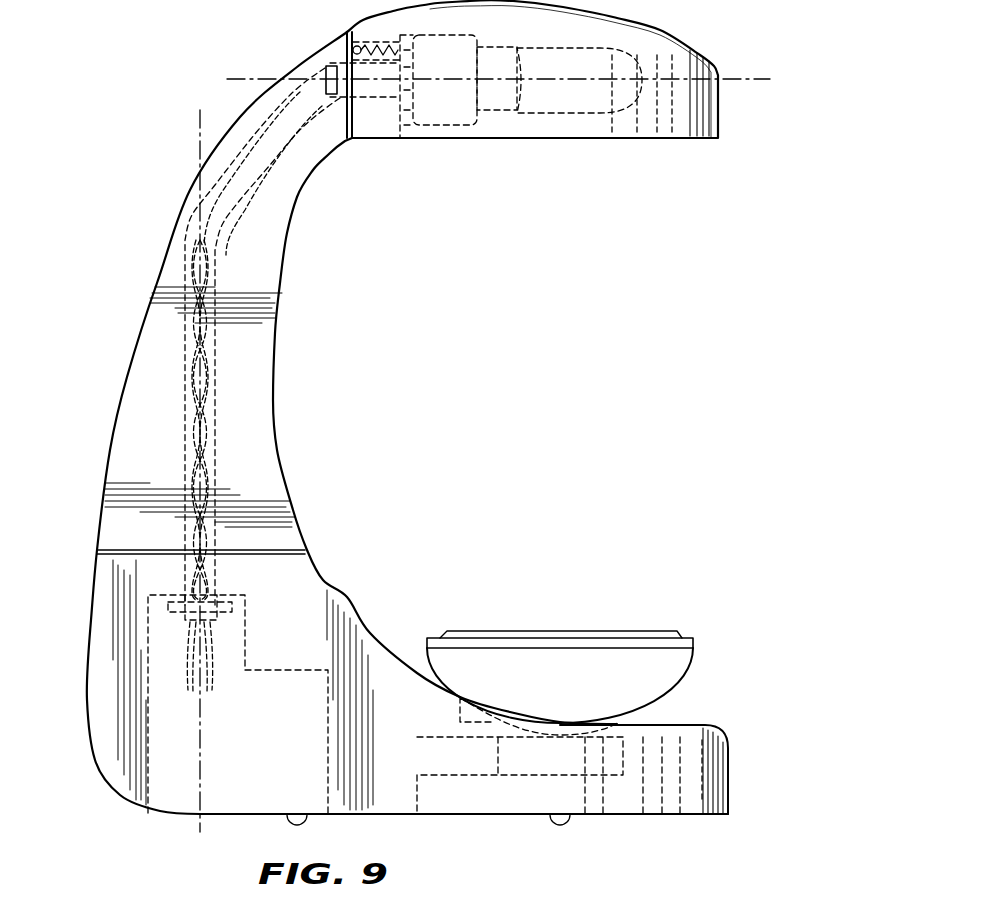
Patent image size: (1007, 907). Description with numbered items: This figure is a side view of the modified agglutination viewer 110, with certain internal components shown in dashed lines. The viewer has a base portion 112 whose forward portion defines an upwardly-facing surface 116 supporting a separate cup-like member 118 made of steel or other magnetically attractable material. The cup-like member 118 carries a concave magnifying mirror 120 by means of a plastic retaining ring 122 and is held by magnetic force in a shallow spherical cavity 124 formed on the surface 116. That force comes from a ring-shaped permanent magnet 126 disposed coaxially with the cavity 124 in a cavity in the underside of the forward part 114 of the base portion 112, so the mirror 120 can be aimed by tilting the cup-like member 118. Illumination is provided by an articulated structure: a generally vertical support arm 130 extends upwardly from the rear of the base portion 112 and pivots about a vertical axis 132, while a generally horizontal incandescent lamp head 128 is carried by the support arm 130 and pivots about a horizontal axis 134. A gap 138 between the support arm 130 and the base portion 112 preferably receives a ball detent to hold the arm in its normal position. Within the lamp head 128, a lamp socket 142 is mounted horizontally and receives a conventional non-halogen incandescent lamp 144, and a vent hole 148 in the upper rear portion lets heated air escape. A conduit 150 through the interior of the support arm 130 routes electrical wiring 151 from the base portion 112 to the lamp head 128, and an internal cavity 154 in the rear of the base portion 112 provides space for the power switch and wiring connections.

The agglutination viewer 110 is at (121, 324).
The base portion 112 is at (374, 637).
The forward part 114 is at (717, 797).
The upwardly-facing surface 116 is at (705, 726).
The cup-like member 118 is at (672, 673).
The concave magnifying mirror 120 is at (510, 637).
The plastic retaining ring 122 is at (694, 641).
The shallow spherical cavity 124 is at (517, 733).
The ring-shaped permanent magnet 126 is at (456, 767).
The incandescent lamp head 128 is at (720, 116).
The support arm 130 is at (273, 343).
The vertical axis 132 is at (200, 133).
The horizontal axis 134 is at (745, 78).
The gap 138 is at (97, 552).
The lamp socket 142 is at (453, 125).
The incandescent lamp 144 is at (583, 115).
The vent hole 148 is at (450, 14).
The conduit 150 is at (297, 150).
The electrical wiring 151 is at (247, 200).
The internal cavity 154 is at (147, 707).